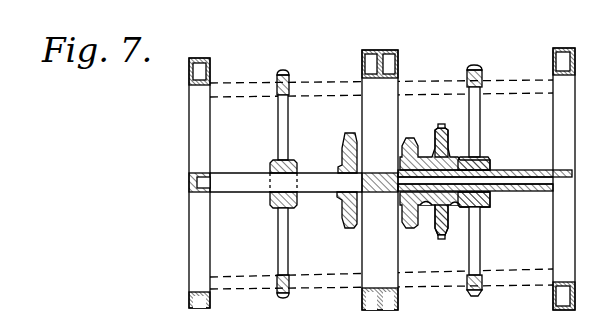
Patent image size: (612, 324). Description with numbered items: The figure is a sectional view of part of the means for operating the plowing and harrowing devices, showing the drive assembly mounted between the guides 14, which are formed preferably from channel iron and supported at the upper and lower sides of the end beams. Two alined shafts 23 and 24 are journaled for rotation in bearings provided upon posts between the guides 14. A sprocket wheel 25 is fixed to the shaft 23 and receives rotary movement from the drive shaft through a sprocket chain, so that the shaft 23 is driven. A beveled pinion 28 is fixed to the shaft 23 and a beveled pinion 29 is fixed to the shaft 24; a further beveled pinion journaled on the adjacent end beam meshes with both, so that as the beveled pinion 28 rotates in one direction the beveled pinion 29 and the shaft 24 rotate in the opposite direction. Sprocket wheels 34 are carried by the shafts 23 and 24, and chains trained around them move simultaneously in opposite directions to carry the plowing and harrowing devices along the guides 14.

The guide 14 is at (381, 50).
The shaft 23 is at (528, 192).
The shaft 24 is at (250, 171).
The sprocket wheel 25 is at (443, 239).
The beveled pinion 28 is at (407, 140).
The beveled pinion 29 is at (347, 139).
The sprocket wheel 34 is at (483, 118).